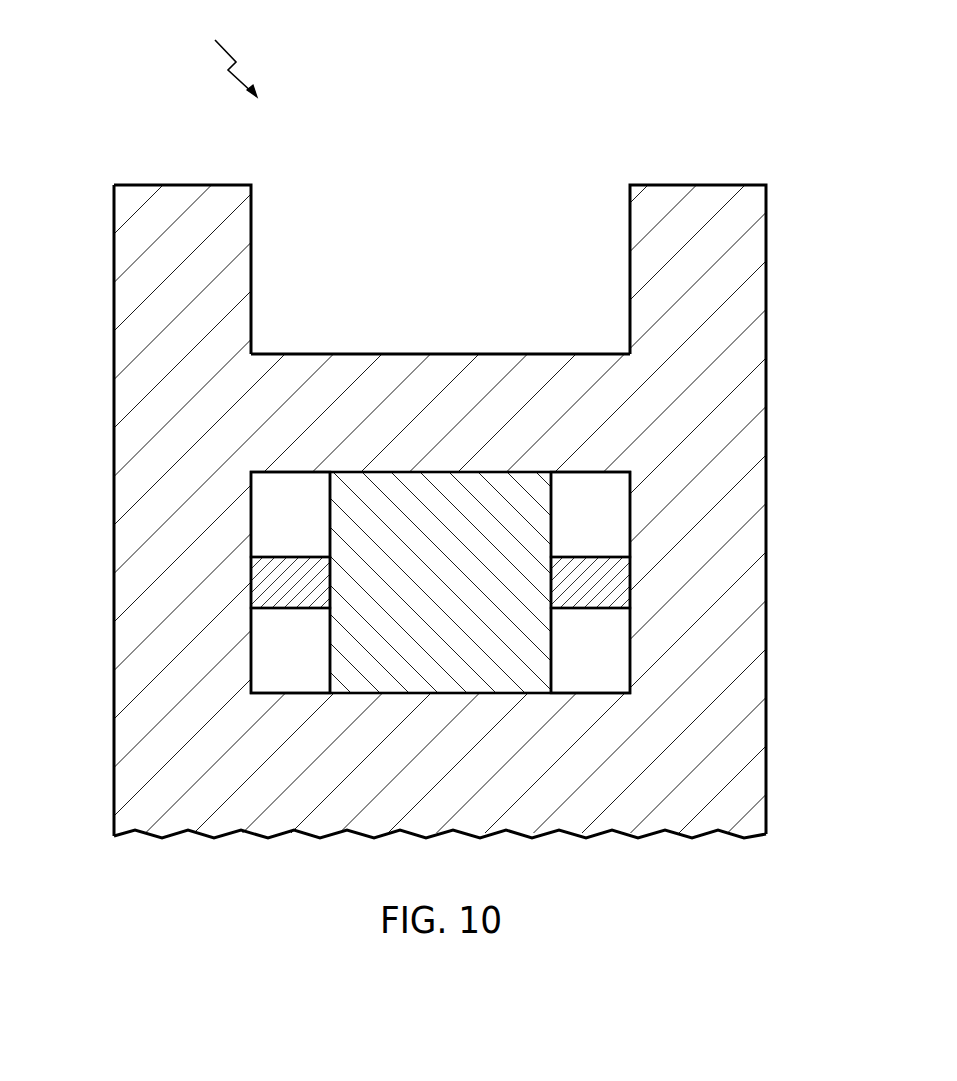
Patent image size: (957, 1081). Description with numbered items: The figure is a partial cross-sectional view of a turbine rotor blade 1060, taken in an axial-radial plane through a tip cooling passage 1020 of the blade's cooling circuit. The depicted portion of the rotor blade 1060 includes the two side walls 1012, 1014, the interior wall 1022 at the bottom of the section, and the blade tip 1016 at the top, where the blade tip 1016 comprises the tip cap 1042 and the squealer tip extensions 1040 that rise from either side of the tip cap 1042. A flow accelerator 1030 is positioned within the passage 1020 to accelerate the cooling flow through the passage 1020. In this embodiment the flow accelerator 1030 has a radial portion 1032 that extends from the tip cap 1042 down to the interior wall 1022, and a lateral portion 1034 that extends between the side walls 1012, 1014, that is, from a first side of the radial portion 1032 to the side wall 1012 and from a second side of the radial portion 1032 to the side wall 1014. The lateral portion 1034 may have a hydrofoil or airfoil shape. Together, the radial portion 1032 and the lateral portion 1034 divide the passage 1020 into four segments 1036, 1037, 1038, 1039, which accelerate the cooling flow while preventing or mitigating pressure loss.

The rotor blade 1060 is at (218, 55).
The blade tip 1016 is at (788, 280).
The squealer tip extensions 1040 is at (134, 262).
The tip cap 1042 is at (482, 352).
The side wall 1014 is at (745, 510).
The side wall 1012 is at (137, 650).
The interior wall 1022 is at (541, 824).
The flow accelerator 1030 is at (407, 470).
The radial portion 1032 is at (440, 684).
The lateral portion 1034 is at (265, 580).
The segment 1036 is at (268, 684).
The segment 1037 is at (587, 684).
The segment 1038 is at (597, 487).
The segment 1039 is at (283, 487).
The tip cooling passage 1020 is at (312, 672).